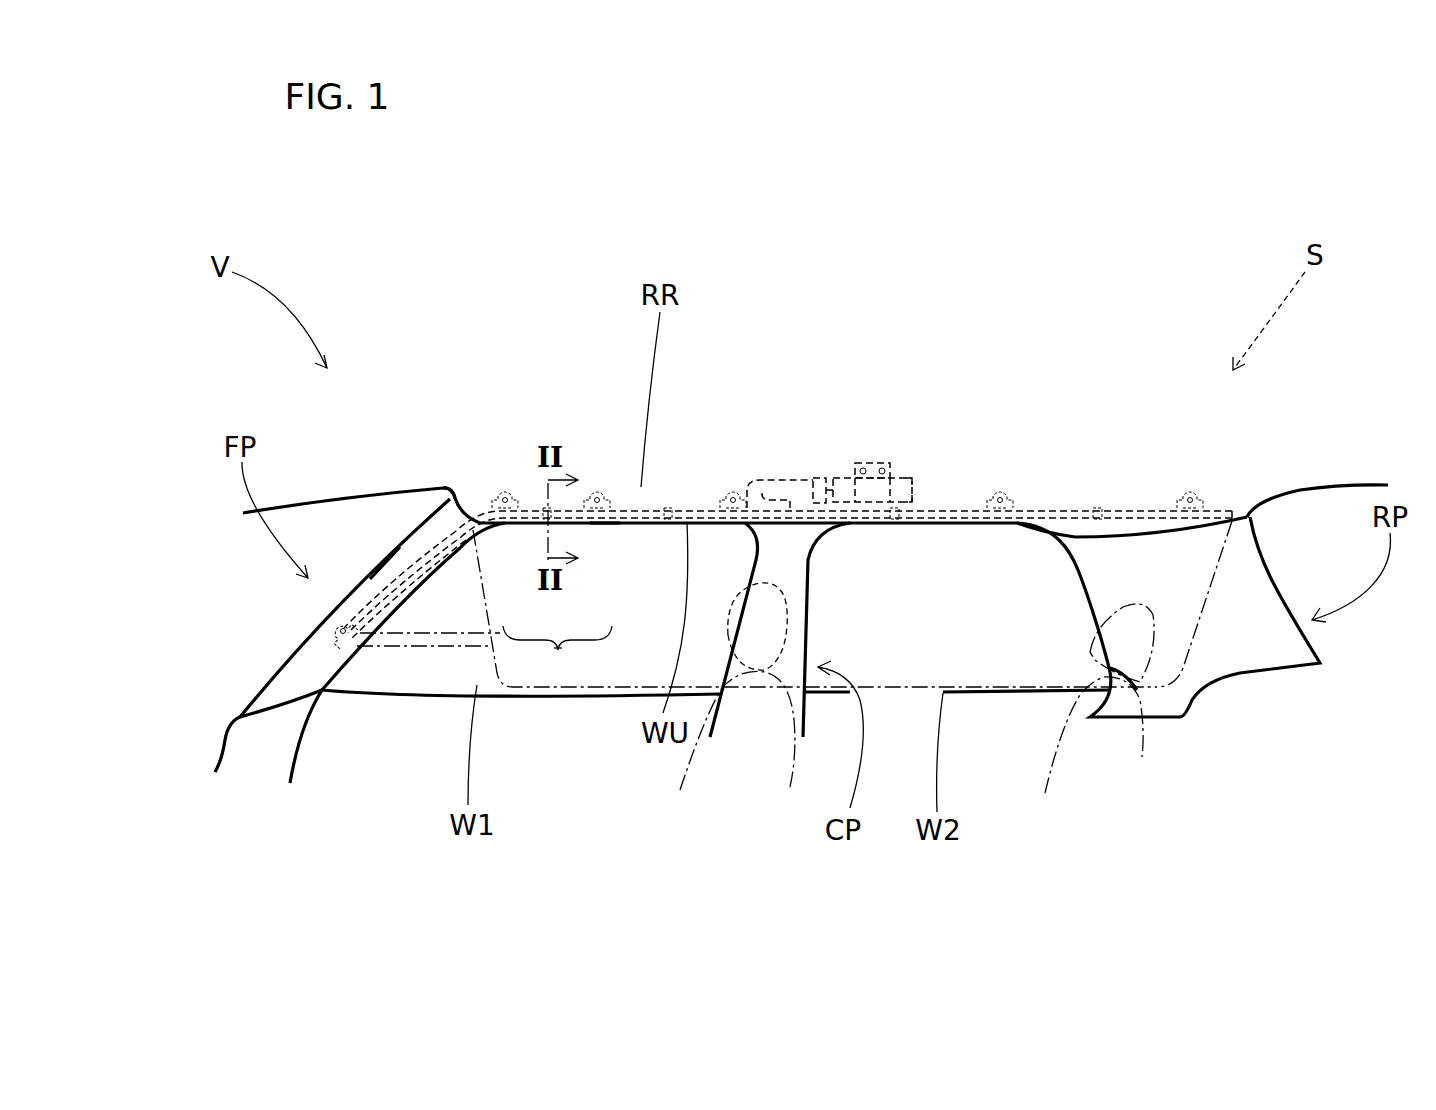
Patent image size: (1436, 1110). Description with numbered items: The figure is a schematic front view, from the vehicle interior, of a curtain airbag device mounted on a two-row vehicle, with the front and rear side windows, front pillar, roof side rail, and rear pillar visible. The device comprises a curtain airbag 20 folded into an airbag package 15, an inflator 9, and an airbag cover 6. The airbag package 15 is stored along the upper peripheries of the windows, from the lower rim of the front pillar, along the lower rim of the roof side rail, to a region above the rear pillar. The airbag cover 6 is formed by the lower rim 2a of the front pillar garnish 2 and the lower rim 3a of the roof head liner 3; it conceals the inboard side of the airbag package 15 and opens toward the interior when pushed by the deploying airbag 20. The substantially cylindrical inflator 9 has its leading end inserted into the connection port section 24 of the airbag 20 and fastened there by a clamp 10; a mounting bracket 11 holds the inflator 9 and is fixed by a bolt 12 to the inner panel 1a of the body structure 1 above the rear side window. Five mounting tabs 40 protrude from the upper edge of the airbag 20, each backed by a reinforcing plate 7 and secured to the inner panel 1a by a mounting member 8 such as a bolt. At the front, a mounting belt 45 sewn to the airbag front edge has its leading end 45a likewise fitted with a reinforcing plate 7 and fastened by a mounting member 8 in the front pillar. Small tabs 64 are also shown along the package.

The body structure 1 is at (480, 448).
The inner panel 1a is at (380, 587).
The front pillar garnish 2 is at (410, 557).
The lower rim of front pillar garnish 2a is at (485, 610).
The roof head liner 3 is at (603, 470).
The lower rim of roof head liner 3a is at (587, 527).
The airbag cover 6 is at (558, 666).
The reinforcing plate 7 is at (338, 624).
The mounting member 8 is at (333, 634).
The inflator 9 is at (913, 480).
The clamp 10 is at (812, 477).
The mounting bracket 11 is at (876, 478).
The bolt 12 is at (910, 477).
The airbag package 15 is at (1073, 507).
The curtain airbag 20 is at (1003, 675).
The connection port section 24 is at (780, 478).
The mounting tabs 40 is at (495, 507).
The mounting belt 45 is at (380, 640).
The leading end of mounting belt 45a is at (340, 640).
The tab 64 is at (547, 507).